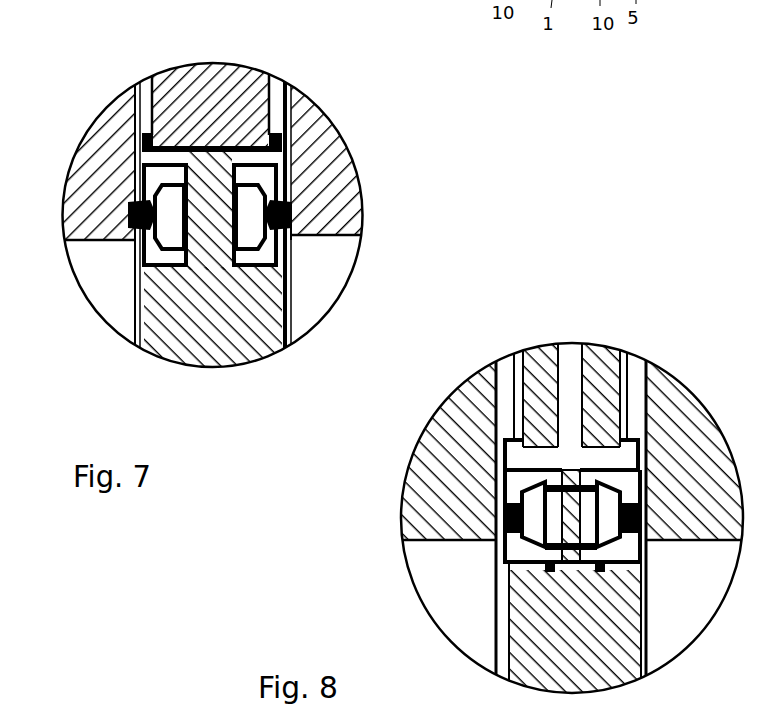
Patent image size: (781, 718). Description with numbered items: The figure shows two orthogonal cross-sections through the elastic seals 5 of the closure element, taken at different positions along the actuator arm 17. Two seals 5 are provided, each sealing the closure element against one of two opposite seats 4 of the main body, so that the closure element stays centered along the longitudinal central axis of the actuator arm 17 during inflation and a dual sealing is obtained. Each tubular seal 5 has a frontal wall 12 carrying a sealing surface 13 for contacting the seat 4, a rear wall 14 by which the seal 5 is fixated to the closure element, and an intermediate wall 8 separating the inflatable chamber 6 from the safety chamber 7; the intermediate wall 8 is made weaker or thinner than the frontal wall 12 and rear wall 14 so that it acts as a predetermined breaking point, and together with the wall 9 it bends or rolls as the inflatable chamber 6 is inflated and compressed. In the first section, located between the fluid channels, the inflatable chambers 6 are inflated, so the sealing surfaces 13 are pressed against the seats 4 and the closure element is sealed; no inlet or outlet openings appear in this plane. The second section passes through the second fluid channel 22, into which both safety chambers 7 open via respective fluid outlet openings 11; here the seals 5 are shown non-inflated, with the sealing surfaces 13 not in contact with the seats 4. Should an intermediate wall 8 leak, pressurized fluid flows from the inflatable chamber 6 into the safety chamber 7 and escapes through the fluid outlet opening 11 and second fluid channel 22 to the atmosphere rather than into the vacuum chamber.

In FIG. 7, the seat 4 is at (132, 190).
In FIG. 8, the seat 4 is at (503, 493).
In FIG. 7, the elastic seal 5 is at (170, 268).
In FIG. 7, the inflatable chamber 6 is at (155, 240).
In FIG. 8, the inflatable chamber 6 is at (522, 530).
In FIG. 7, the safety chamber 7 is at (170, 160).
In FIG. 8, the safety chamber 7 is at (515, 452).
In FIG. 7, the intermediate wall 8 is at (150, 165).
In FIG. 7, the wall 9 is at (181, 150).
In FIG. 8, the fluid outlet opening 11 is at (600, 480).
In FIG. 7, the frontal wall 12 is at (130, 236).
In FIG. 7, the sealing surface 13 is at (130, 211).
In FIG. 8, the sealing surface 13 is at (505, 518).
In FIG. 7, the rear wall 14 is at (219, 180).
In FIG. 7, the actuator arm 17 is at (223, 98).
In FIG. 8, the actuator arm 17 is at (602, 377).
In FIG. 8, the second fluid channel 22 is at (572, 356).